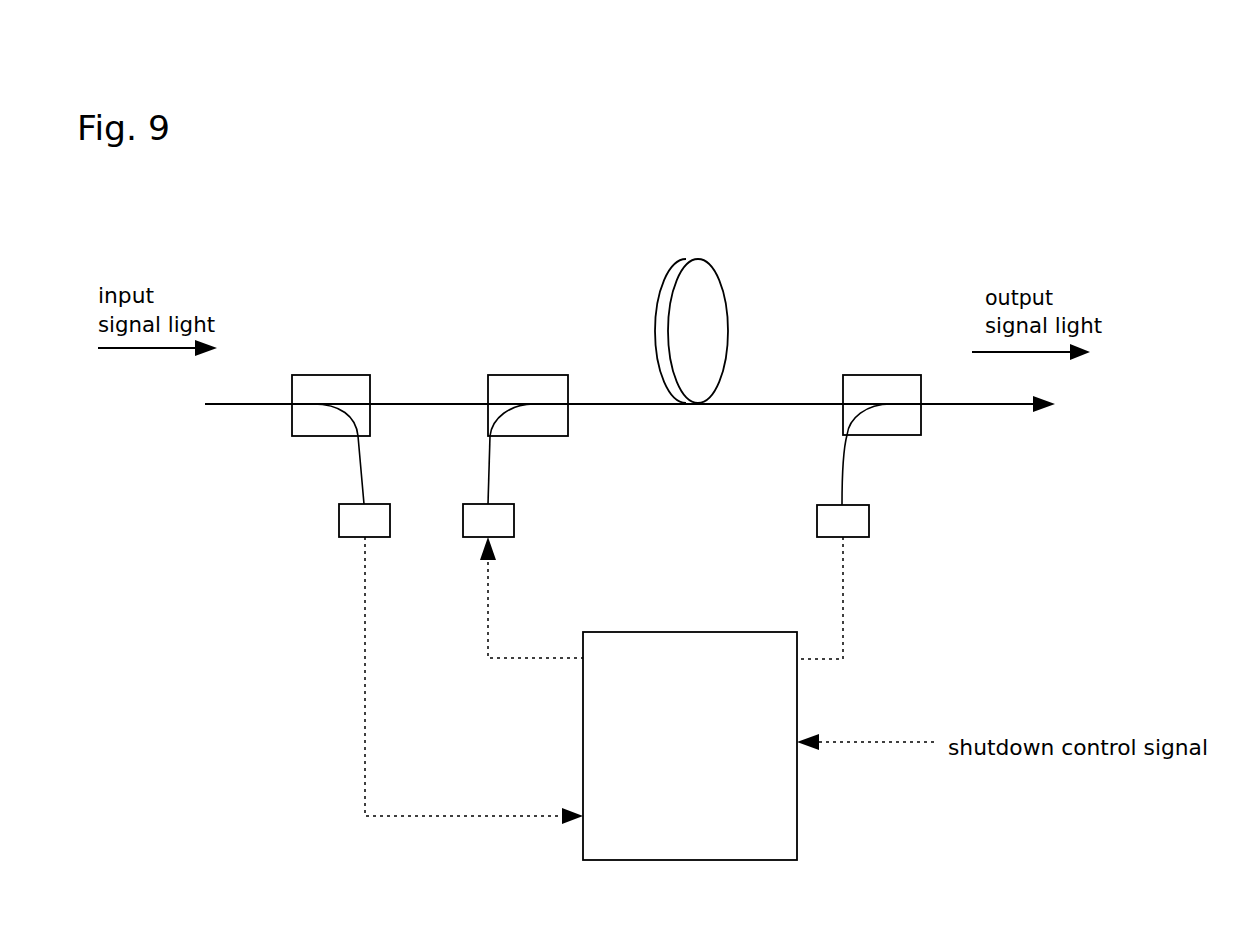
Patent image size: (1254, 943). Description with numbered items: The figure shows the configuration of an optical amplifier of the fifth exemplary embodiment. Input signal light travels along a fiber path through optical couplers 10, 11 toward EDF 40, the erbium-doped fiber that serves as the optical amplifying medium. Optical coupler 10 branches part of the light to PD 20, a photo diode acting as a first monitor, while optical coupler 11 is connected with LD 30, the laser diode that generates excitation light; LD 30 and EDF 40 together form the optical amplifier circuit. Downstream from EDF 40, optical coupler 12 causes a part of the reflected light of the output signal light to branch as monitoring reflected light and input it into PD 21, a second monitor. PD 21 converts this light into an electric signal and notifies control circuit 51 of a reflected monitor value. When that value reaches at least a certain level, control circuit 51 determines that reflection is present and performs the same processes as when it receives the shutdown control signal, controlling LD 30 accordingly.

The optical coupler 10 is at (312, 376).
The optical coupler 11 is at (510, 376).
The optical coupler 12 is at (862, 378).
The PD (Photo Diode) 20 is at (338, 525).
The PD (Photo Diode) 21 is at (869, 522).
The LD (Laser Diode) 30 is at (514, 525).
The EDF (Erbium-Doped Fiber) 40 is at (682, 258).
The control circuit 51 is at (746, 632).